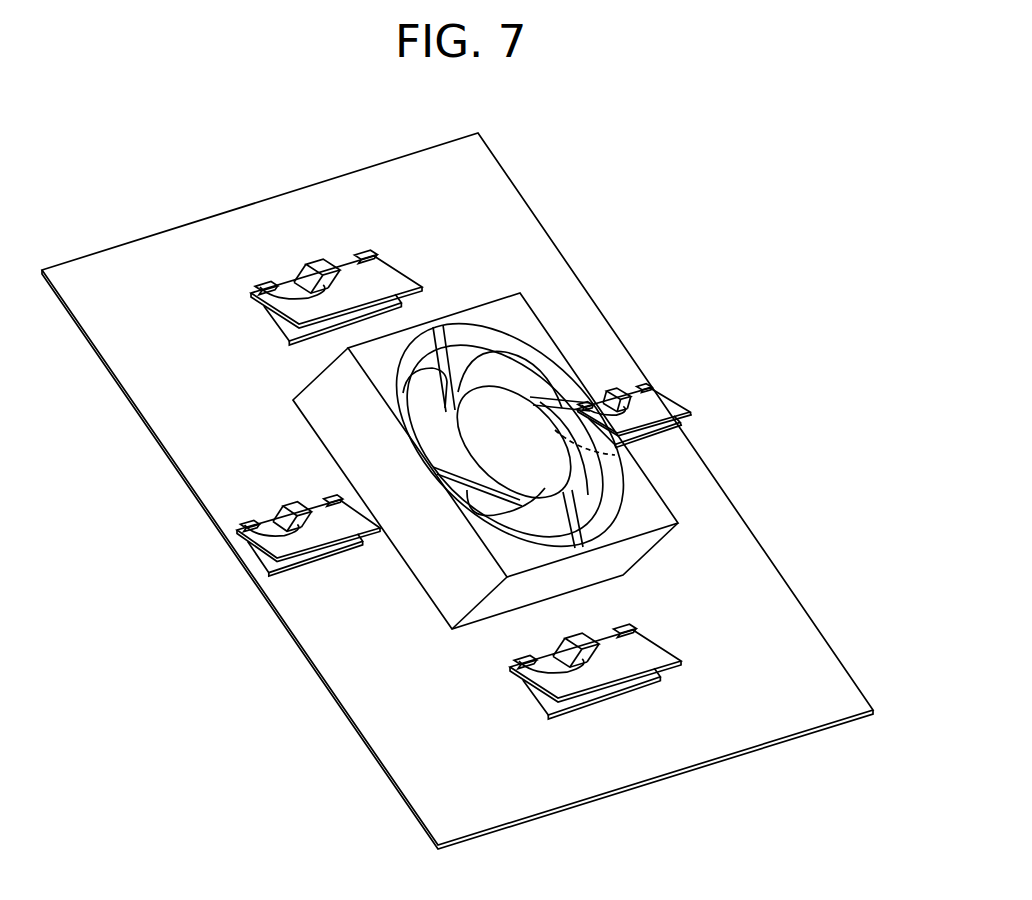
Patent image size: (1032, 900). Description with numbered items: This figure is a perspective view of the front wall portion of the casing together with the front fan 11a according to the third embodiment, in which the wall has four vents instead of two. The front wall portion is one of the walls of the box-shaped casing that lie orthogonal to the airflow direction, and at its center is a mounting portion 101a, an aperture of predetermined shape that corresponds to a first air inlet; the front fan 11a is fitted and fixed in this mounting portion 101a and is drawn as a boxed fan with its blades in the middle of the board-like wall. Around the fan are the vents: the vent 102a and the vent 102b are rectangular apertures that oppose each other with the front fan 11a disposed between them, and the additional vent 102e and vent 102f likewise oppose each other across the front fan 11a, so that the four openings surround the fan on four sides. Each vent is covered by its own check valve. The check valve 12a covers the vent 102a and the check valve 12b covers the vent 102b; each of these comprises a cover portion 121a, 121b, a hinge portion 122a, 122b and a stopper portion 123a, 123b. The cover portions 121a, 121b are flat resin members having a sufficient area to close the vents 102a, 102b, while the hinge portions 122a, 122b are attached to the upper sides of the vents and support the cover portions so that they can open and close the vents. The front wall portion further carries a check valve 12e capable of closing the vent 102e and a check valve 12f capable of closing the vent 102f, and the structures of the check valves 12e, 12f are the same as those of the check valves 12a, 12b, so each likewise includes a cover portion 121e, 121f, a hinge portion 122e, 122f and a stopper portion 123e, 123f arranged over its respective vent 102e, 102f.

The front fan 11a is at (569, 323).
The mounting portion 101a is at (427, 595).
The check valve 12a is at (263, 252).
The cover portion 121a is at (418, 276).
The hinge portion 122a is at (362, 256).
The stopper portion 123a is at (262, 305).
The vent 102a is at (290, 335).
The check valve 12b is at (607, 716).
The cover portion 121b is at (662, 650).
The hinge portion 122b is at (625, 628).
The stopper portion 123b is at (520, 677).
The vent 102b is at (541, 704).
The check valve 12e is at (236, 578).
The cover portion 121e is at (322, 548).
The hinge portion 122e is at (243, 527).
The stopper portion 123e is at (234, 535).
The vent 102e is at (264, 572).
The check valve 12f is at (682, 383).
The cover portion 121f is at (650, 427).
The hinge portion 122f is at (570, 408).
The stopper portion 123f is at (656, 392).
The vent 102f is at (662, 428).